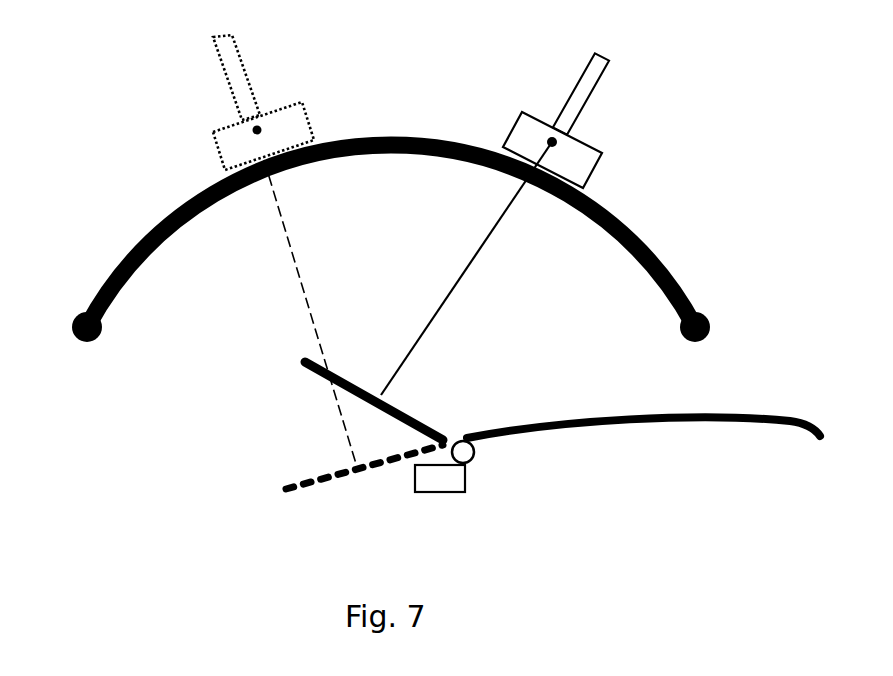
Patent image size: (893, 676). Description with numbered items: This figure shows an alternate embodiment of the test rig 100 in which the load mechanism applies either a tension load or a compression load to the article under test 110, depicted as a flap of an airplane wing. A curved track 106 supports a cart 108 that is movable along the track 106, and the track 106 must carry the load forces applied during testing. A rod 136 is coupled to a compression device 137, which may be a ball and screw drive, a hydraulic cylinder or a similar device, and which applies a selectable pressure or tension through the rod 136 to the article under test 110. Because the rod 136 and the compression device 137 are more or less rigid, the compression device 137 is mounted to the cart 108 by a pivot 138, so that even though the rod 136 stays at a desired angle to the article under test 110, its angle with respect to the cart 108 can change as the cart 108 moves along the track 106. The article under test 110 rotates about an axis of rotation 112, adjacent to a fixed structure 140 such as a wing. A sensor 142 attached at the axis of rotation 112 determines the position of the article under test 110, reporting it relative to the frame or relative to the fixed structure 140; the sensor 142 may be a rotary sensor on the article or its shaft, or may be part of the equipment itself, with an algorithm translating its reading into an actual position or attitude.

The test rig 100 is at (676, 116).
The track 106 is at (178, 205).
The cart 108 is at (527, 112).
The article under test 110 is at (402, 412).
The axis of rotation 112 is at (473, 467).
The rod 136 is at (468, 267).
The compression device 137 is at (584, 72).
The pivot 138 is at (557, 142).
The fixed structure 140 is at (623, 417).
The sensor 142 is at (437, 492).